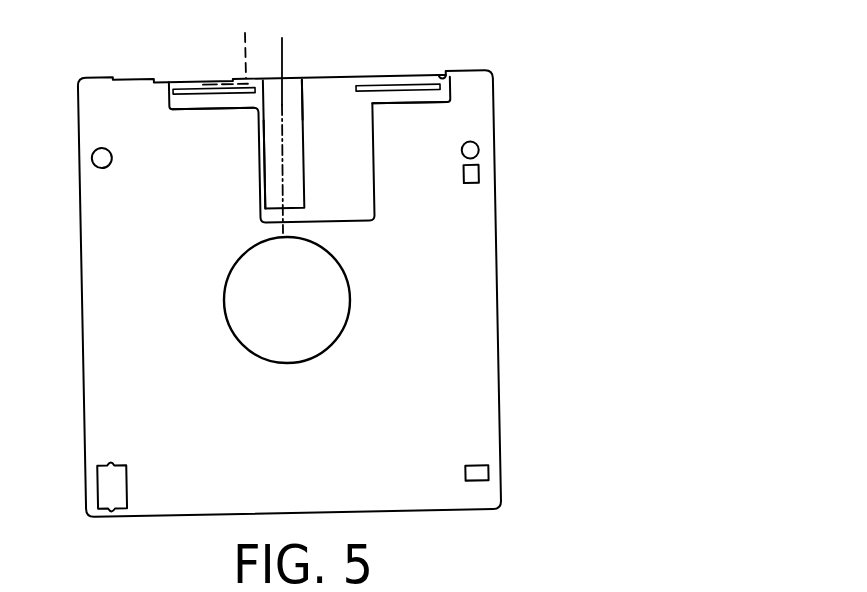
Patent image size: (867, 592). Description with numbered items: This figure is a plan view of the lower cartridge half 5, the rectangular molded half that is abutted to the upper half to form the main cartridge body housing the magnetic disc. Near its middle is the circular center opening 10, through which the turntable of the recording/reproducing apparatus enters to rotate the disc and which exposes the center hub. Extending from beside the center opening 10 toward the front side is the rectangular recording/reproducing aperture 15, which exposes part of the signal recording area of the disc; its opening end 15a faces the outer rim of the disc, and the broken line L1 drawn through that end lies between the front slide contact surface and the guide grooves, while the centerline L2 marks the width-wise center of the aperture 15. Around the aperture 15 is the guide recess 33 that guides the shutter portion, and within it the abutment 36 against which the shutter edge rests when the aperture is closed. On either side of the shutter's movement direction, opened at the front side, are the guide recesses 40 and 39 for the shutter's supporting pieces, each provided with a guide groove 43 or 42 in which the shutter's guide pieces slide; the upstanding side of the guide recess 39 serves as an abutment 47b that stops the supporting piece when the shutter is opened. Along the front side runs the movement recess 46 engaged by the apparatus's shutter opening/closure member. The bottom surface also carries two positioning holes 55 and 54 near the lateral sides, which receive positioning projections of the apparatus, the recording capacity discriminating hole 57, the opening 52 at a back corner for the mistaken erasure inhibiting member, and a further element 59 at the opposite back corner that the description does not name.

The lower cartridge half 5 is at (100, 322).
The circular center opening 10 is at (237, 334).
The recording/reproducing aperture 15 is at (297, 131).
The opening end 15a is at (288, 84).
The guide recess 33 is at (358, 208).
The abutment 36 is at (262, 160).
The guide recess 39 is at (405, 99).
The guide recess 40 is at (196, 108).
The guide groove 42 is at (410, 82).
The guide groove 43 is at (187, 84).
The movement recess 46 is at (207, 82).
The abutment 47b is at (444, 78).
The opening 52 is at (124, 483).
The positioning hole 54 is at (480, 148).
The positioning hole 55 is at (93, 155).
The recording capacity discriminating hole 57 is at (462, 180).
The detection hole 59 is at (472, 467).
The broken line L1 is at (248, 42).
The centerline L2 is at (282, 53).